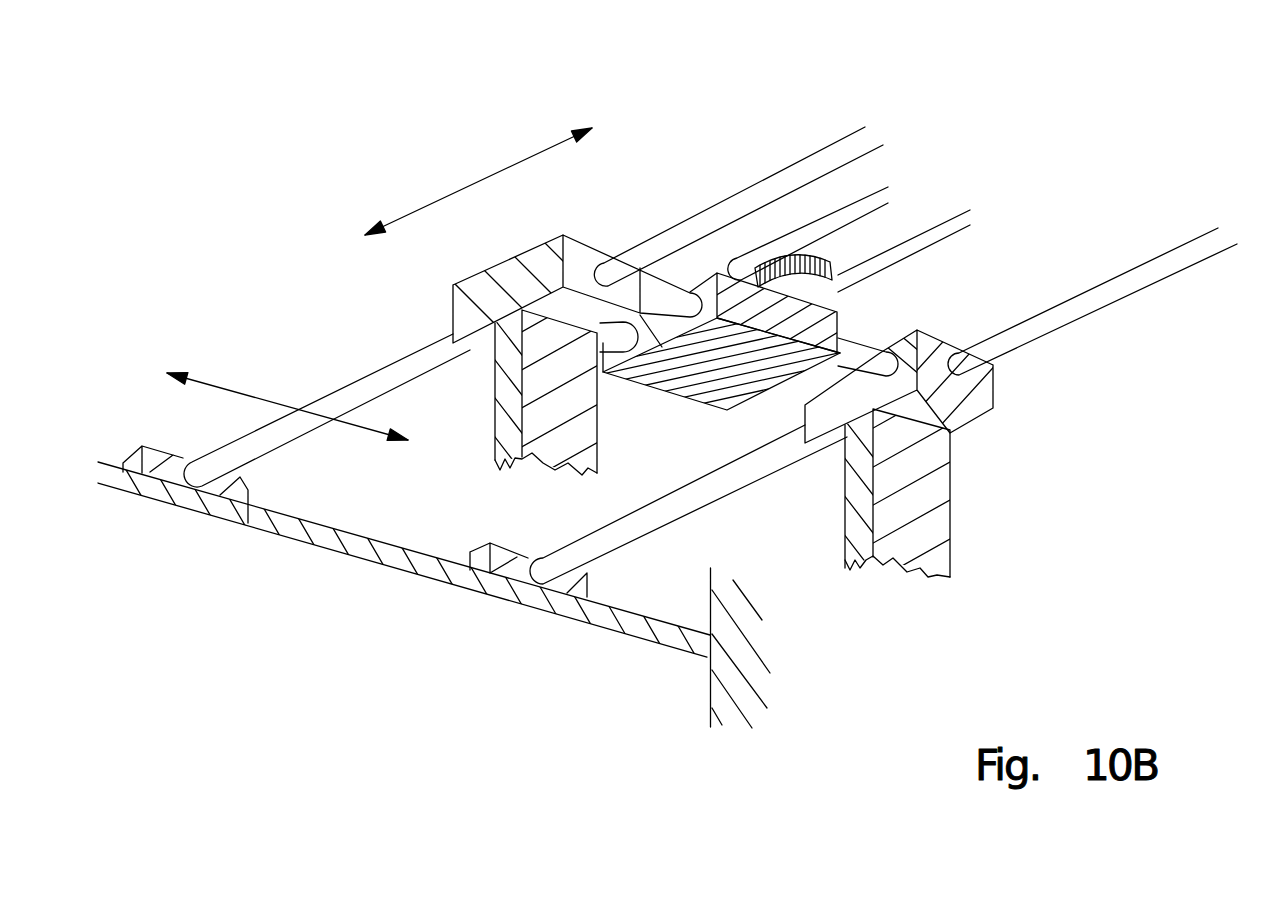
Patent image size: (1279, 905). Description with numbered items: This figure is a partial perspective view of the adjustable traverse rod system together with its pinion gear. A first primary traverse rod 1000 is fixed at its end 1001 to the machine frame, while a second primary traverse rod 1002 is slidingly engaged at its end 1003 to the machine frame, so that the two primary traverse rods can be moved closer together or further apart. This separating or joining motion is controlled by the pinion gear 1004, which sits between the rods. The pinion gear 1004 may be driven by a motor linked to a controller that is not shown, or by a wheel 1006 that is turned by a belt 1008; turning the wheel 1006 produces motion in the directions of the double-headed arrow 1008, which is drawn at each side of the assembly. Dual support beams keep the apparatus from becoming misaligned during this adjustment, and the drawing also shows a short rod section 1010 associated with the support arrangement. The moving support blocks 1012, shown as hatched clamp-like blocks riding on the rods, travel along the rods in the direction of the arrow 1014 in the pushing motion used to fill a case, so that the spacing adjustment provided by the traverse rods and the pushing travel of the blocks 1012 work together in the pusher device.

The first primary traverse rod 1000 is at (1087, 320).
The fixed end 1001 is at (525, 582).
The second primary traverse rod 1002 is at (853, 160).
The sliding end 1003 is at (248, 523).
The pinion gear 1004 is at (755, 360).
The wheel 1006 is at (806, 255).
The belt / arrow 1008 is at (1118, 132).
The short cross rail 1010 is at (863, 343).
The moving support blocks 1012 is at (993, 400).
The arrow 1014 is at (478, 175).